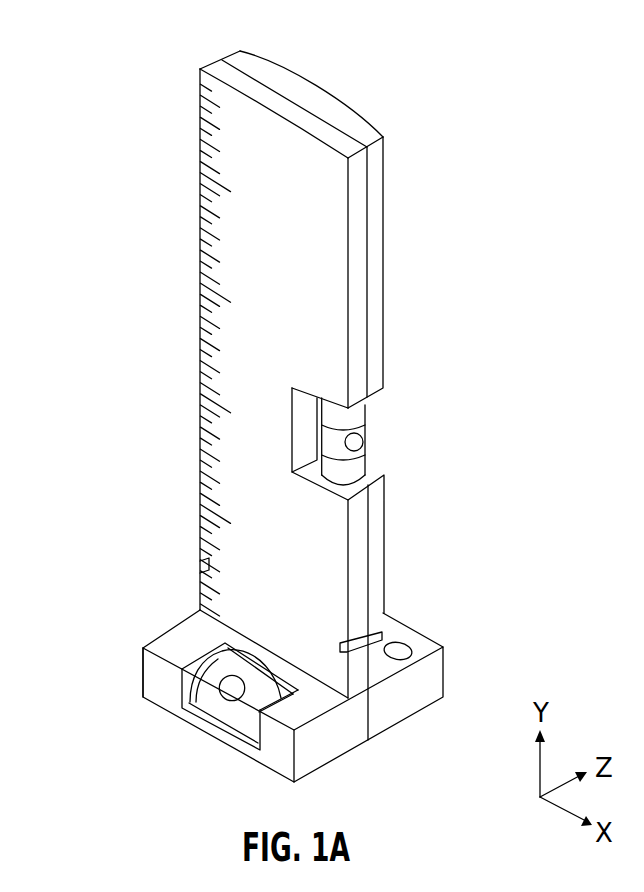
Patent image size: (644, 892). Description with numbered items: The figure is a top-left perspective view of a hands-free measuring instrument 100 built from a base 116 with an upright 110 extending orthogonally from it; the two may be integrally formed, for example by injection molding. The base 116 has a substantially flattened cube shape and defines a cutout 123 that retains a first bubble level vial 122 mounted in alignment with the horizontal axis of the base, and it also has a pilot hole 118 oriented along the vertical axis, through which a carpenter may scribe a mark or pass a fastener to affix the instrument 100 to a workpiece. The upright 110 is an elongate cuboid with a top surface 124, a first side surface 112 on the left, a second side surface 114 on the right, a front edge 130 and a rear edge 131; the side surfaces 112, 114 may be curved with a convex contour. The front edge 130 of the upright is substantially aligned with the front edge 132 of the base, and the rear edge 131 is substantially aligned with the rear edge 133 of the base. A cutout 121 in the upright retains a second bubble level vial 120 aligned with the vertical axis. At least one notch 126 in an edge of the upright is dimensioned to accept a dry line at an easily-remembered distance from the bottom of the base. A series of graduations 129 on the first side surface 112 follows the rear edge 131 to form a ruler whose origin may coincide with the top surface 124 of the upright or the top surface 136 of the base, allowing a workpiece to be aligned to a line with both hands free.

The hands-free measuring instrument 100 is at (408, 55).
The upright 110 is at (197, 132).
The first side surface 112 is at (315, 182).
The second side surface 114 is at (355, 110).
The base 116 is at (182, 629).
The pilot hole 118 is at (402, 645).
The second bubble level vial 120 is at (364, 427).
The cutout 121 is at (374, 476).
The first bubble level vial 122 is at (230, 708).
The cutout 123 is at (185, 681).
The top surface 124 is at (258, 73).
The notch 126 is at (443, 722).
The graduations 129 is at (243, 352).
The front edge 130 is at (377, 365).
The rear edge 131 is at (200, 332).
The front edge 132 is at (313, 753).
The rear edge 133 is at (143, 674).
The top surface 136 is at (300, 710).